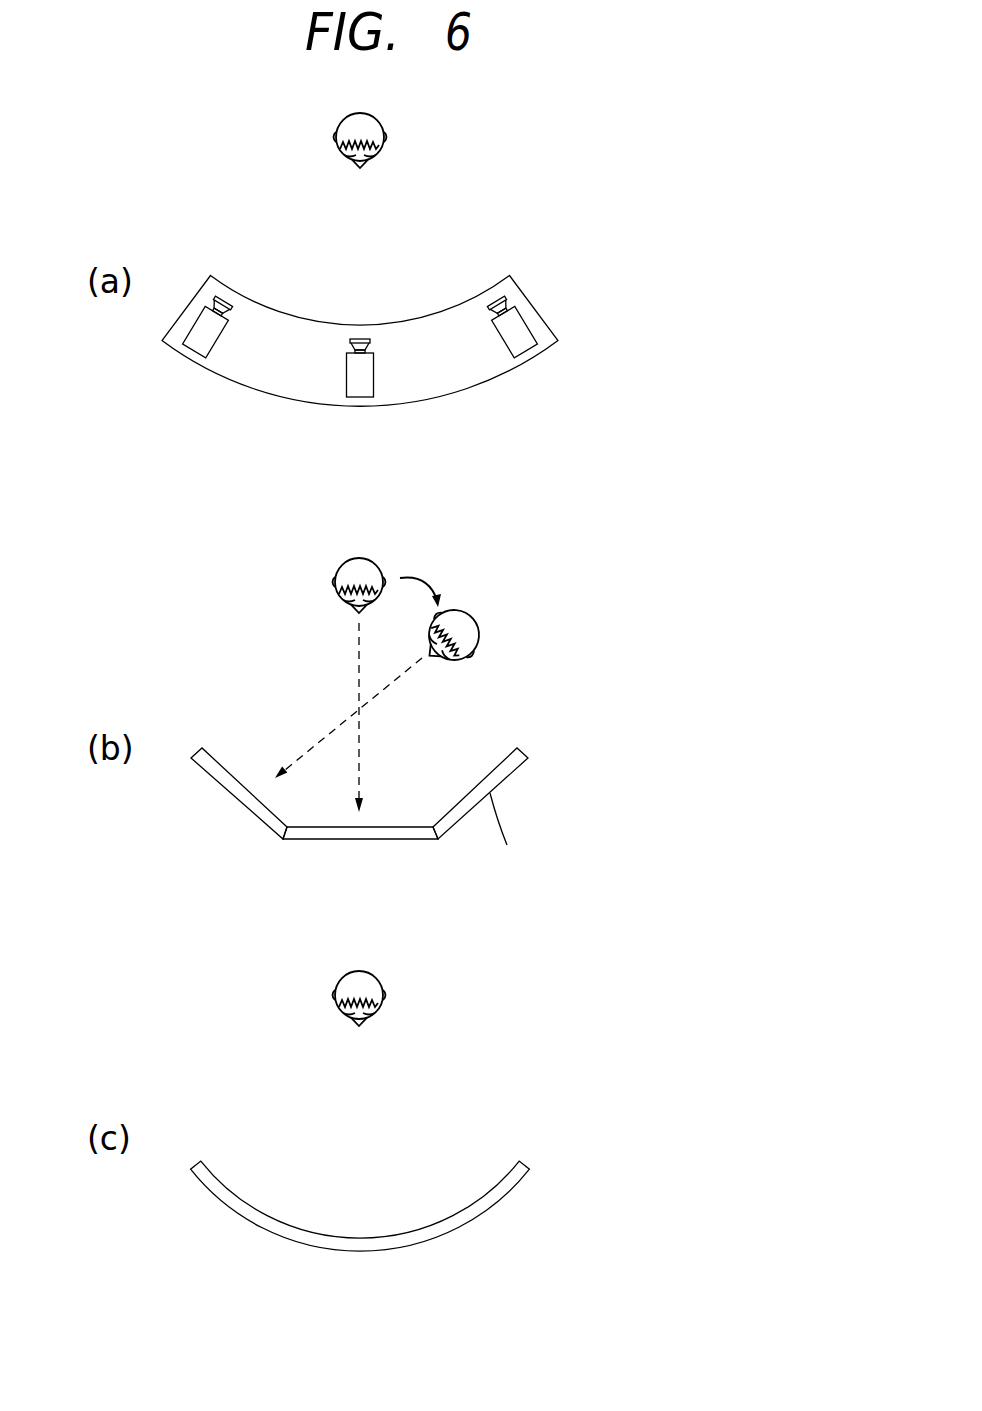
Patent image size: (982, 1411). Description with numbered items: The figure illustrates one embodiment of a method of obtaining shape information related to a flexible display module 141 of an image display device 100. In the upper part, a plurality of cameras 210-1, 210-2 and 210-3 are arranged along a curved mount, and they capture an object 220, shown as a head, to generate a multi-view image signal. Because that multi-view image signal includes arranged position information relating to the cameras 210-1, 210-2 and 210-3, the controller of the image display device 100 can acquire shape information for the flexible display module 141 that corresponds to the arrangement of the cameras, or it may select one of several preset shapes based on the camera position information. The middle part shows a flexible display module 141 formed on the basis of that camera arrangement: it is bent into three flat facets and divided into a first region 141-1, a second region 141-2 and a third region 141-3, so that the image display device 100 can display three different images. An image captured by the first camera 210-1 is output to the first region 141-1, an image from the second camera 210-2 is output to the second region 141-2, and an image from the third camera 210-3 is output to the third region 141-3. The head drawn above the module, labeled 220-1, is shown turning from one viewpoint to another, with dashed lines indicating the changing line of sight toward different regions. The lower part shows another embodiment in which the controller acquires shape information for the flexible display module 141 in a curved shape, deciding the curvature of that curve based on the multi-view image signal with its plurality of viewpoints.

The image display device 100 is at (417, 971).
The flexible display module 141 is at (457, 1213).
The first region 141-1 is at (235, 775).
The second region 141-2 is at (405, 825).
The third region 141-3 is at (477, 787).
The first camera 210-1 is at (195, 353).
The second camera 210-2 is at (360, 397).
The third camera 210-3 is at (527, 357).
The object 220 is at (383, 124).
The user's head 220-1 is at (375, 560).